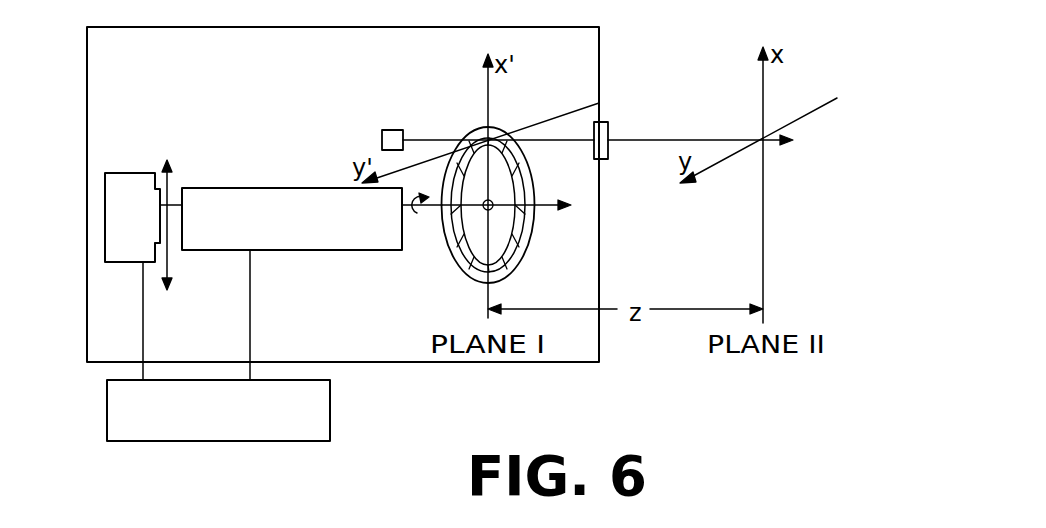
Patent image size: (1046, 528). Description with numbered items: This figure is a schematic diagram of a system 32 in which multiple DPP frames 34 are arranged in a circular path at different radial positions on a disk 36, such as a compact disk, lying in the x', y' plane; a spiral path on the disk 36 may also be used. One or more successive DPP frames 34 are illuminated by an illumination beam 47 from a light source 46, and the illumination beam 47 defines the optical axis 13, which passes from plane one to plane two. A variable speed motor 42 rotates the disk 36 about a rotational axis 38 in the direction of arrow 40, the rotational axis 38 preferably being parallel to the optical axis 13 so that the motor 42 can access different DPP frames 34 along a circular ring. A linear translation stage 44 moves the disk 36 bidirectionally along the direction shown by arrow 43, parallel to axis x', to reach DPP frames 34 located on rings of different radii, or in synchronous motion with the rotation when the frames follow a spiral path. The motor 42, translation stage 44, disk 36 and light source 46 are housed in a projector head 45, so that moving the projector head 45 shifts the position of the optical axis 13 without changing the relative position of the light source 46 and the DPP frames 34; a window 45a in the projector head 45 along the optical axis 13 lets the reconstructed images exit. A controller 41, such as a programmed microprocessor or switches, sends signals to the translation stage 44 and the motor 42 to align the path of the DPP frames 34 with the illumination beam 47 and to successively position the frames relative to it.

The optical axis 13 is at (712, 140).
The system 32 is at (659, 60).
The DPP frames 34 is at (527, 169).
The disk 36 is at (517, 268).
The rotational axis 38 is at (553, 209).
The arrow 40 is at (420, 212).
The controller 41 is at (107, 412).
The variable speed motor 42 is at (214, 188).
The arrow 43 is at (172, 254).
The translation stage 44 is at (133, 173).
The projector head 45 is at (87, 260).
The window 45a is at (610, 131).
The light source 46 is at (392, 130).
The illumination beam 47 is at (437, 140).